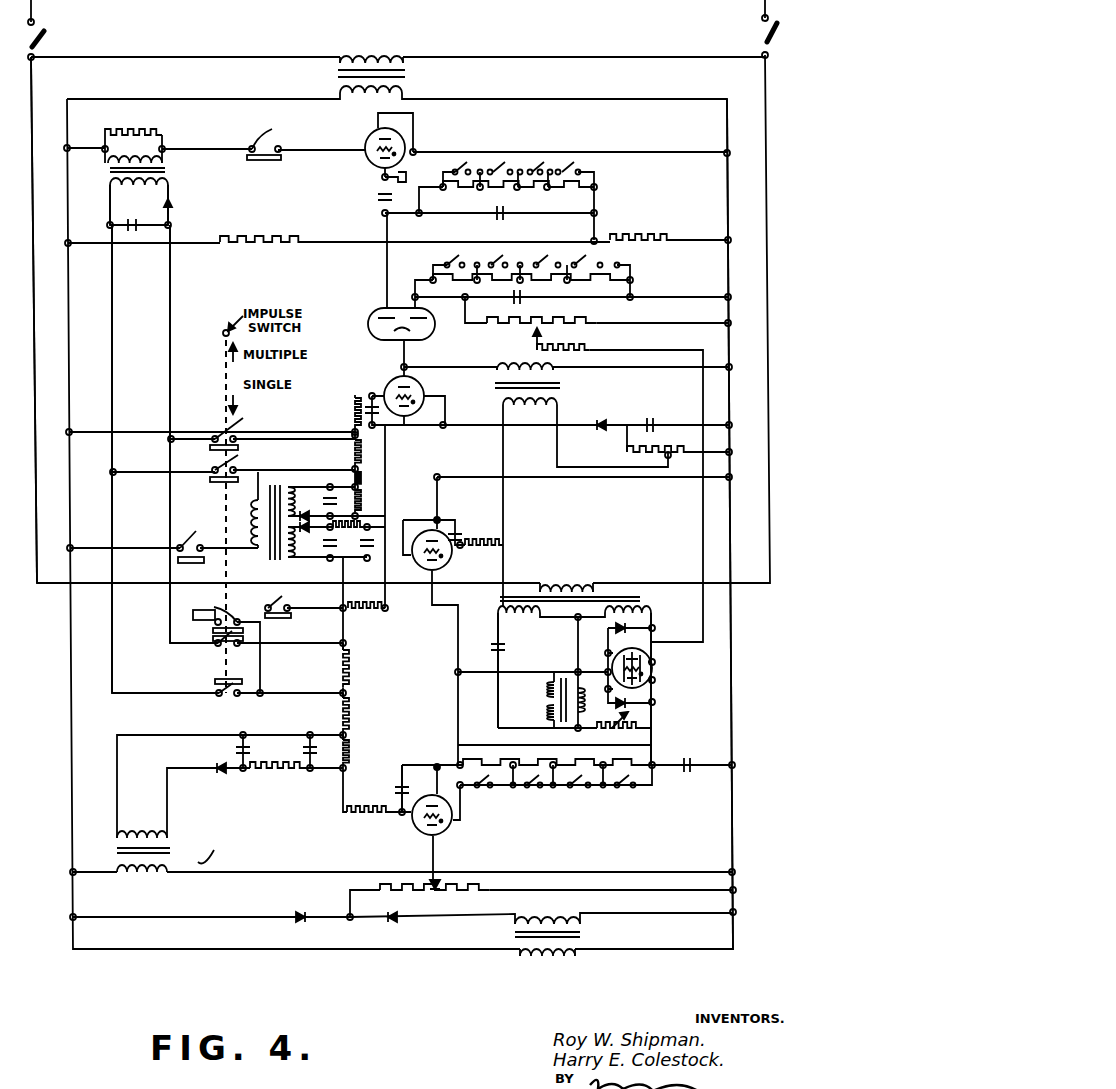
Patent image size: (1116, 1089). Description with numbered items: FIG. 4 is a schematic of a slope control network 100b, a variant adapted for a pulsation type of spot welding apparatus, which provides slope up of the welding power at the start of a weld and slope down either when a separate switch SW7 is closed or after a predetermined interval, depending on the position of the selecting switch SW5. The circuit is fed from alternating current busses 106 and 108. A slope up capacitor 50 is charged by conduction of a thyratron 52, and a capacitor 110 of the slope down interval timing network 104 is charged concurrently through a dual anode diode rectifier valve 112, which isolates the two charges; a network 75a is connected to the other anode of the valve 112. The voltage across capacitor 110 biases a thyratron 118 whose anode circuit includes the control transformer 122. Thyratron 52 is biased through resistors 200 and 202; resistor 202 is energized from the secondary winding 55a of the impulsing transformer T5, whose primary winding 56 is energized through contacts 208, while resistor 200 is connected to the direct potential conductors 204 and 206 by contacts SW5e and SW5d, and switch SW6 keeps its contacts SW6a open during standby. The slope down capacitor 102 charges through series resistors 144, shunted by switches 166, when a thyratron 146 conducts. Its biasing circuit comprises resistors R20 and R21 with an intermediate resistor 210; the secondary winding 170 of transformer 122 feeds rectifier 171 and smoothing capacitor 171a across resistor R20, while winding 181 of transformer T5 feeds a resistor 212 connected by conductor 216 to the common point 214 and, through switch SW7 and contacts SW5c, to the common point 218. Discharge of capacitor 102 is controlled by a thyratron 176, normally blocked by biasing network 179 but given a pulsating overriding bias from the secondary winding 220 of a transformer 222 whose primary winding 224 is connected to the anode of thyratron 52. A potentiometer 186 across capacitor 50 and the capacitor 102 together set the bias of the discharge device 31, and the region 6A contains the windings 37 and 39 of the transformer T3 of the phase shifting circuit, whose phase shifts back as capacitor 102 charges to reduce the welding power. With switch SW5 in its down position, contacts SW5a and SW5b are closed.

The network 100b is at (528, 48).
The slope down capacitor 102 is at (688, 773).
The slope down interval timing network 104 is at (600, 186).
The alternating current bus 106 is at (729, 433).
The alternating current bus 108 is at (70, 377).
The capacitor 110 is at (502, 218).
The vacuum type dual anode discharge device 112 is at (372, 325).
The thyratron 118 is at (365, 152).
The control transformer 122 is at (160, 169).
The series connected resistors 144 is at (600, 765).
The thyratron 146 is at (453, 830).
The shunting switches 166 is at (630, 790).
The secondary winding 170 is at (112, 190).
The rectifier 171 is at (171, 210).
The smoothing capacitor 171a is at (140, 229).
The thyratron 176 is at (453, 561).
The biasing network 179 is at (652, 423).
The secondary winding 181 is at (300, 558).
The potentiometer 186 is at (598, 323).
The biasing resistor 200 is at (360, 456).
The biasing resistor 202 is at (360, 499).
The direct potential conductor 204 is at (172, 294).
The direct potential conductor 206 is at (113, 316).
The contacts 208 is at (195, 533).
The biasing resistor 210 is at (341, 701).
The resistor 212 is at (362, 611).
The common point 214 is at (341, 731).
The conductor 216 is at (344, 655).
The common point 218 is at (346, 708).
The secondary winding 220 is at (557, 405).
The transformer 222 is at (560, 386).
The primary winding 224 is at (498, 368).
The electron tube 31 is at (653, 681).
The winding 37 is at (552, 684).
The winding 39 is at (552, 712).
The slope up capacitor 50 is at (518, 302).
The thyratron 52 is at (425, 391).
The secondary winding 55a is at (290, 486).
The primary winding 56 is at (252, 550).
The rectifier unit 6A is at (657, 631).
The transformer T3 is at (572, 688).
The network 75a is at (631, 279).
The biasing resistor R20 is at (340, 666).
The biasing resistor R21 is at (349, 753).
The selecting switch SW5 is at (226, 395).
The contacts SW5a is at (215, 692).
The contacts SW5b is at (215, 645).
The contacts SW5c is at (222, 619).
The contacts SW5d is at (238, 459).
The contacts SW5e is at (237, 427).
The switch SW6 is at (266, 160).
The contacts SW6a is at (266, 130).
The switch SW7 is at (268, 618).
The impulsing transformer T5 is at (269, 506).